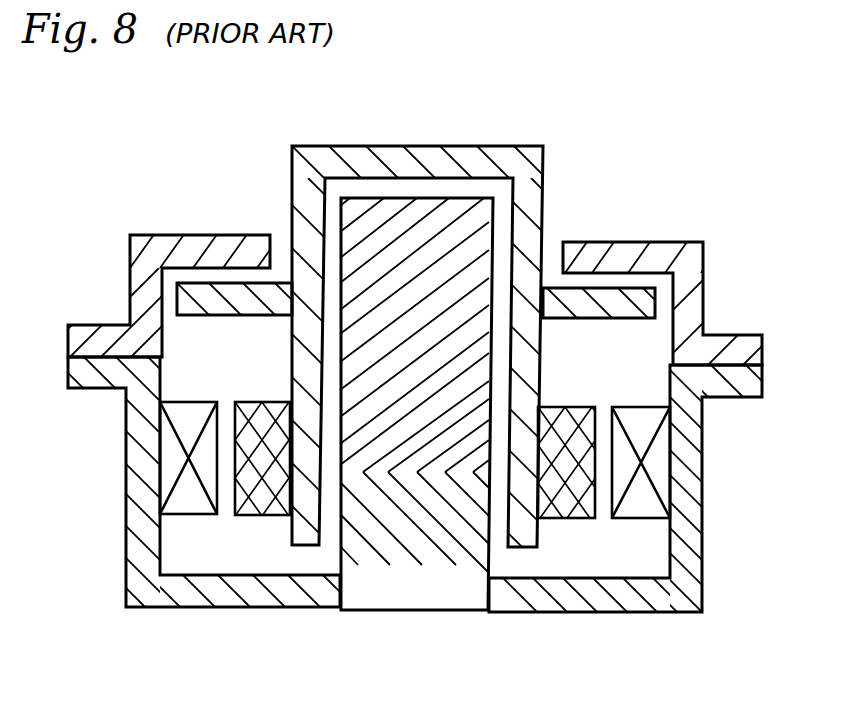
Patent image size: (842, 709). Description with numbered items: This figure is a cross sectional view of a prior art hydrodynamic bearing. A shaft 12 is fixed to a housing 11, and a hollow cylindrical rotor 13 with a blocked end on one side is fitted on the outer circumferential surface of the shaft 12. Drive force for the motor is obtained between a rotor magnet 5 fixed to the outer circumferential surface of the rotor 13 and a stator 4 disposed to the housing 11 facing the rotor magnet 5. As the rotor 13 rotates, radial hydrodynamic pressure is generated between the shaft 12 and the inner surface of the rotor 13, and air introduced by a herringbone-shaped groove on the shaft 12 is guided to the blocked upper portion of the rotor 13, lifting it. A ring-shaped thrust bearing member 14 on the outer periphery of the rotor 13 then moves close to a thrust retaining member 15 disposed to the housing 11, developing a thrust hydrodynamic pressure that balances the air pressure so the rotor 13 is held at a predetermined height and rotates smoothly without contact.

The stator 4 is at (657, 457).
The rotor magnet 5 is at (577, 512).
The housing 11 is at (573, 597).
The shaft 12 is at (417, 585).
The rotor 13 is at (437, 162).
The thrust bearing member 14 is at (635, 303).
The thrust retaining member 15 is at (593, 257).